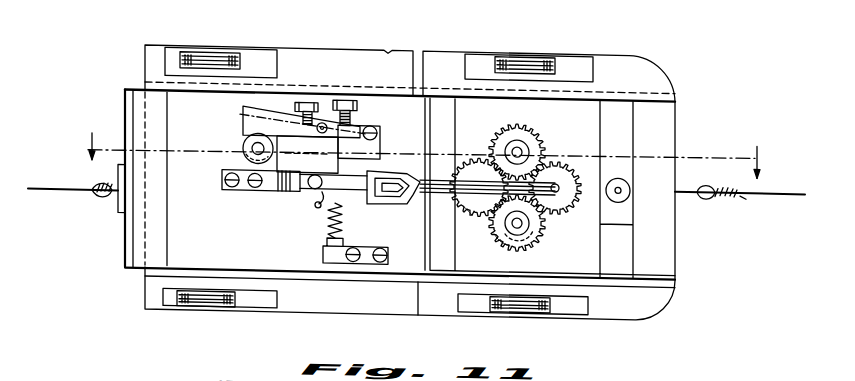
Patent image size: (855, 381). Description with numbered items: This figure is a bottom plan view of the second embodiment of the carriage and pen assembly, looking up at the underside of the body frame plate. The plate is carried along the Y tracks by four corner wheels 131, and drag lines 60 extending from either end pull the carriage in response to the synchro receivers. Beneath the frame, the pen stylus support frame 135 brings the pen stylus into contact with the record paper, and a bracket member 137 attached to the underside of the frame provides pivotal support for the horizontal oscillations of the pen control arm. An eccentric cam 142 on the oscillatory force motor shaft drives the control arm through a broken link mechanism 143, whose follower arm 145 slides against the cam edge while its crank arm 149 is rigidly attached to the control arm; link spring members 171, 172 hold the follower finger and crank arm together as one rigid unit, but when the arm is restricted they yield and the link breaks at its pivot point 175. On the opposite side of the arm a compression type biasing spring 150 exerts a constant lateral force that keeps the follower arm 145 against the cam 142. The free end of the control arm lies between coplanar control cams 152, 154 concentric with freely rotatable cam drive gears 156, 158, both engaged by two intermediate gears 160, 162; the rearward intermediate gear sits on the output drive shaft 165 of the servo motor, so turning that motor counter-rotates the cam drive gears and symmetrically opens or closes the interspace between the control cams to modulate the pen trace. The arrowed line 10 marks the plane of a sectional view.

The section line 10 is at (425, 155).
The drag lines 60 is at (63, 194).
The corner wheels 131 is at (265, 29).
The pen stylus support frame 135 is at (472, 121).
The bracket member 137 is at (268, 189).
The eccentric cam 142 is at (246, 146).
The broken link mechanism 143 is at (364, 113).
The follower arm 145 is at (243, 129).
The crank arm 149 is at (378, 135).
The compression type biasing spring 150 is at (342, 218).
The control cam 152 is at (527, 126).
The control cam 154 is at (528, 229).
The cam drive gear 156 is at (547, 140).
The cam drive gear 158 is at (503, 241).
The intermediate gear 160 is at (470, 196).
The intermediate gear 162 is at (545, 219).
The output drive shaft 165 is at (490, 166).
The link spring member 171 is at (304, 99).
The link spring member 172 is at (358, 97).
The pivot point 175 is at (320, 128).